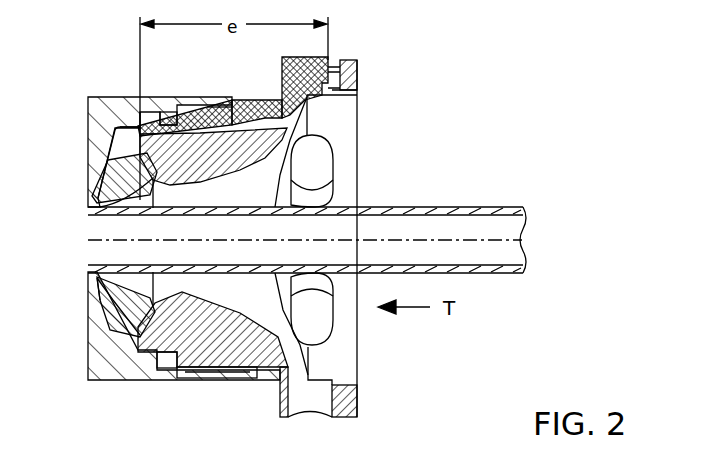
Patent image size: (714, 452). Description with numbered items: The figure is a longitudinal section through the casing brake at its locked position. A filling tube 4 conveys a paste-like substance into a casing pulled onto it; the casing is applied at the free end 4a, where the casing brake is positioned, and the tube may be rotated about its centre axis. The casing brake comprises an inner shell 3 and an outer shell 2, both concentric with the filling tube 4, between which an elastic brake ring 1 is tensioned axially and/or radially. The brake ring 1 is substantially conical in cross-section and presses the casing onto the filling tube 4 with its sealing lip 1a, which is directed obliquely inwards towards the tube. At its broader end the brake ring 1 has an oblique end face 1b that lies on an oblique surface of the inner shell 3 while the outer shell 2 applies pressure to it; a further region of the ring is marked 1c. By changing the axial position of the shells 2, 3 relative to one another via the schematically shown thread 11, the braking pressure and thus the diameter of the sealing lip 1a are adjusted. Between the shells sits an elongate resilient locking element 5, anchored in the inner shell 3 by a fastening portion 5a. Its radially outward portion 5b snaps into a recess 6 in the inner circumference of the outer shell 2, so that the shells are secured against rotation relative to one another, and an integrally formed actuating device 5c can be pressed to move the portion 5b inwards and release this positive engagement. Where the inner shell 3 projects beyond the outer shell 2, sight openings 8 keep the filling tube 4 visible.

The brake ring 1 is at (118, 300).
The sealing lip 1a is at (93, 198).
The oblique end face 1b is at (140, 127).
The ring recess 1c is at (113, 163).
The outer shell 2 is at (112, 380).
The inner shell 3 is at (237, 360).
The filling tube 4 is at (390, 207).
The free end of the filling tube 4a is at (88, 266).
The locking element 5 is at (358, 72).
The fastening portion 5a is at (100, 207).
The portion of the locking element 5b is at (257, 100).
The actuating device 5c is at (312, 55).
The recess 6 is at (238, 105).
The sight openings 8 is at (328, 157).
The thread 11 is at (188, 110).